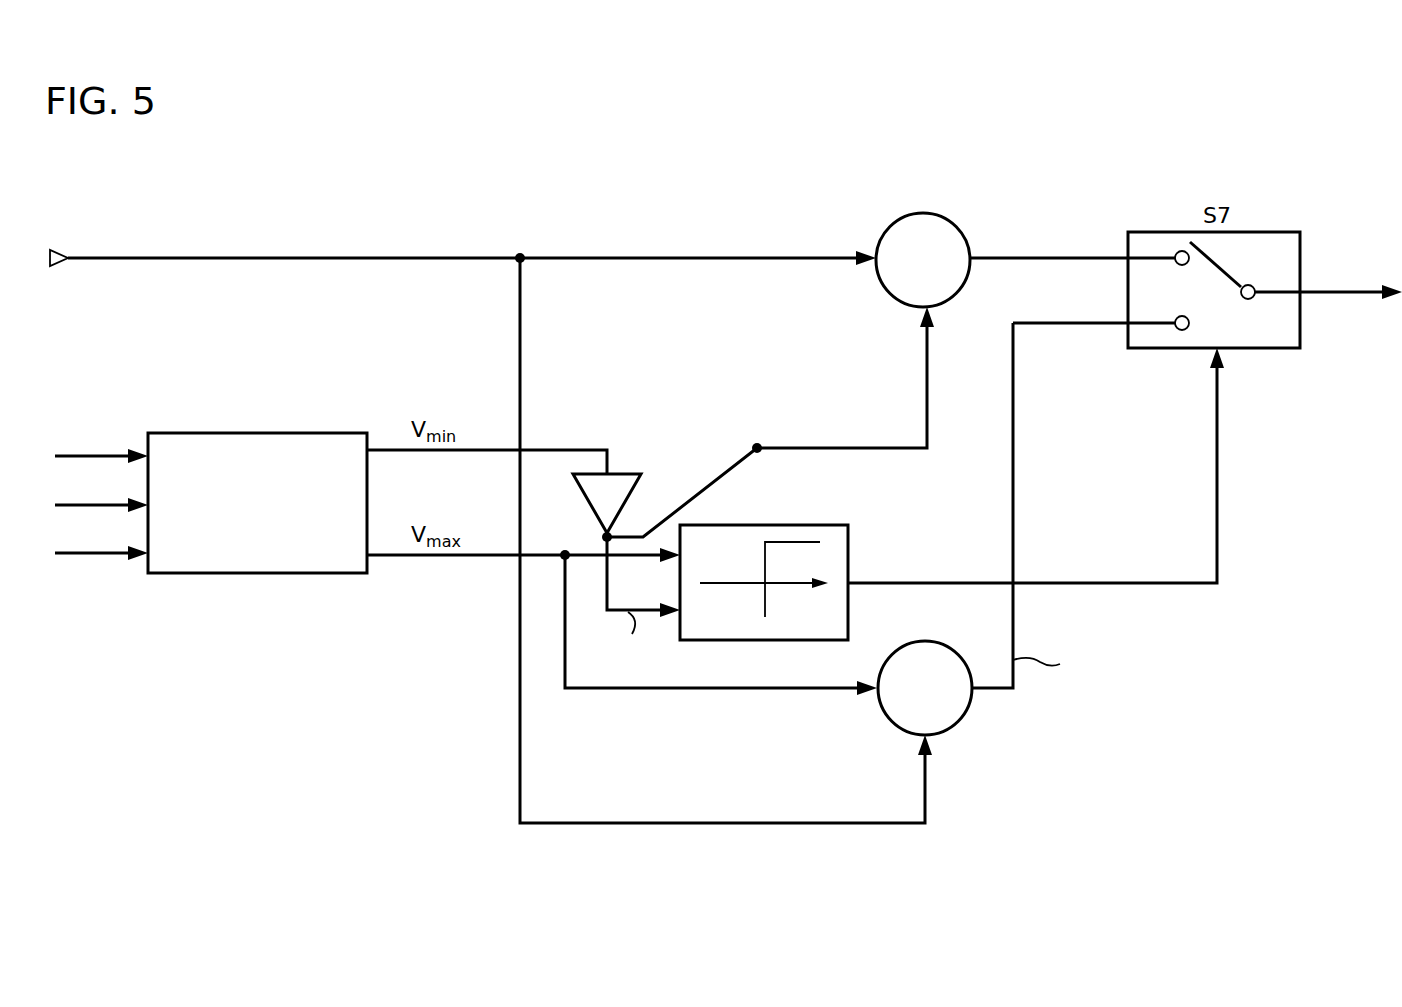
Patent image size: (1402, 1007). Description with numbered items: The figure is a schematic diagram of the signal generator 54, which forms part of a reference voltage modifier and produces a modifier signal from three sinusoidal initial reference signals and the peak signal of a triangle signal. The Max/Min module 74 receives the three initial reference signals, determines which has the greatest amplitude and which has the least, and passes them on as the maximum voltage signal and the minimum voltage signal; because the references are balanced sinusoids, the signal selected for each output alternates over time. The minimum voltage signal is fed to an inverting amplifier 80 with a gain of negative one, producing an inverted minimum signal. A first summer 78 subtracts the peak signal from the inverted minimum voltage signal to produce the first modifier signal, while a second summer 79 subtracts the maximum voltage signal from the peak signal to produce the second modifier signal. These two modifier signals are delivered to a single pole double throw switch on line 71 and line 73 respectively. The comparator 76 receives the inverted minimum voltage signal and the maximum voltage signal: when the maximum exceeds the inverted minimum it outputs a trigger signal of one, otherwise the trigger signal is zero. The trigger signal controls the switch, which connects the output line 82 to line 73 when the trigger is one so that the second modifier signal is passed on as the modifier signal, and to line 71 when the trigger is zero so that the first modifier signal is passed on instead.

The signal generator 54 is at (566, 222).
The Max/Min module 74 is at (230, 433).
The inverting amplifier 80 is at (620, 512).
The comparator 76 is at (818, 525).
The first summer 78 is at (913, 213).
The second summer 79 is at (955, 725).
The line 71 is at (1112, 256).
The line 73 is at (1100, 325).
The output line 82 is at (1335, 296).